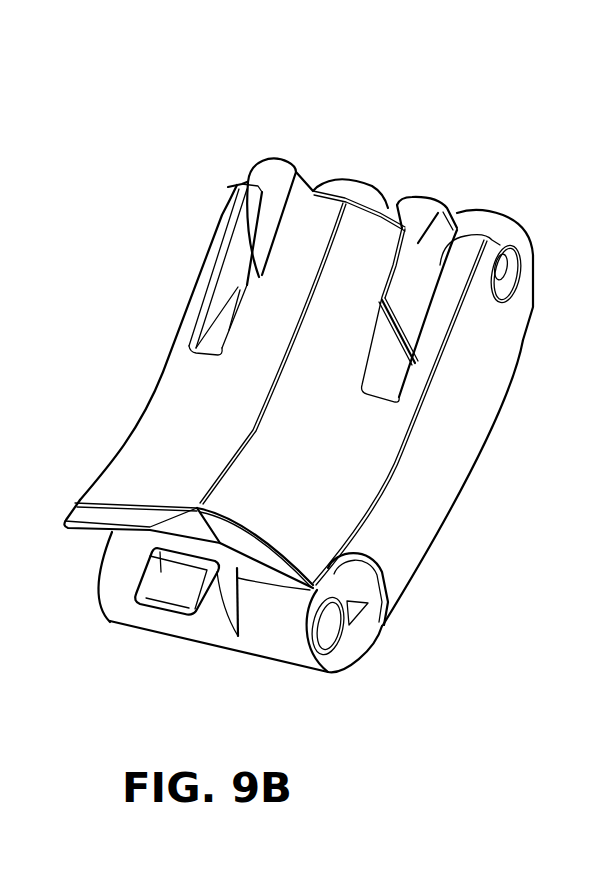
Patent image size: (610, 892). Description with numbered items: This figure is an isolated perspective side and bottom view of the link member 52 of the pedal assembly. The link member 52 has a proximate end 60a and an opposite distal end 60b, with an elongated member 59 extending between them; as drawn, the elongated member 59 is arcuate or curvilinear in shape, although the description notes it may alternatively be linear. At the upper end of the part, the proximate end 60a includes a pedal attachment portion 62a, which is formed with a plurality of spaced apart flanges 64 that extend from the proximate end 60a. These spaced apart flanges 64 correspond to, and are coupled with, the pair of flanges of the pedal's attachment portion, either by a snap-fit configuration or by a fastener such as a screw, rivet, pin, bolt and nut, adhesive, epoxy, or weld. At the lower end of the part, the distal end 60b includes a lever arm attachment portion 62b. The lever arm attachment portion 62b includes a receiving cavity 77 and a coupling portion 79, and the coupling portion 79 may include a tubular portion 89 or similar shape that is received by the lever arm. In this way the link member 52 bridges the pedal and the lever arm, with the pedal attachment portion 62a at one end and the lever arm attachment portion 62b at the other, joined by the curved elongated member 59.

The link member 52 is at (566, 128).
The elongated member 59 is at (200, 375).
The proximate end 60a is at (503, 333).
The distal end 60b is at (107, 543).
The pedal attachment portion 62a is at (563, 250).
The lever arm attachment portion 62b is at (193, 663).
The spaced apart flanges 64 is at (500, 220).
The receiving cavity 77 is at (370, 603).
The coupling portion 79 is at (287, 663).
The tubular portion 89 is at (118, 604).